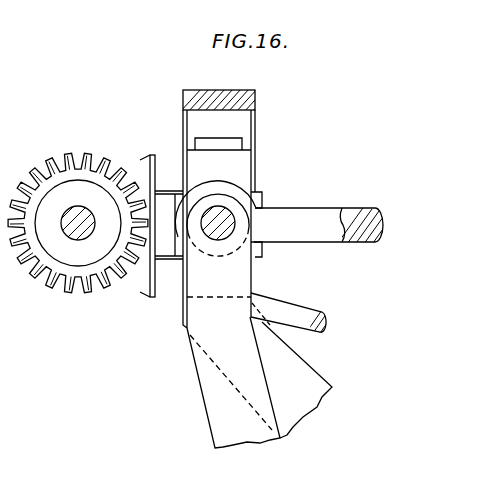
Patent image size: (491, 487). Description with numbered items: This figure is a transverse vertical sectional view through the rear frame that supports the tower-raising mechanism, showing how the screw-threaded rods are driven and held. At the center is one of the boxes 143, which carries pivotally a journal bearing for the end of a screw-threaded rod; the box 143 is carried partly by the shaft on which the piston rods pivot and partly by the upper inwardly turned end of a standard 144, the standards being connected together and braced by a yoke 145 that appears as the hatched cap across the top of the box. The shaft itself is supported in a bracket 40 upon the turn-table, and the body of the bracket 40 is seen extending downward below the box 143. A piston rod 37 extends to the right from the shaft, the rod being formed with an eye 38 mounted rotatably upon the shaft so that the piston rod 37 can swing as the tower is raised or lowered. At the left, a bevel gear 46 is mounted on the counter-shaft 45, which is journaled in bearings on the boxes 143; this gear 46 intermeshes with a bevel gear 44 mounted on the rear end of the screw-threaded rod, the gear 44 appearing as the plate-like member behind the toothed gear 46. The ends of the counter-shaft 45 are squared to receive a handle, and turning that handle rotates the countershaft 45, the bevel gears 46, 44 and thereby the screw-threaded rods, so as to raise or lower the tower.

The piston rod 37 is at (302, 220).
The eye 38 is at (233, 192).
The bracket 40 is at (215, 380).
The bevel gear 44 is at (143, 158).
The counter-shaft 45 is at (72, 235).
The bevel gear 46 is at (58, 155).
The box 143 is at (238, 170).
The standard 144 is at (313, 380).
The yoke 145 is at (185, 90).